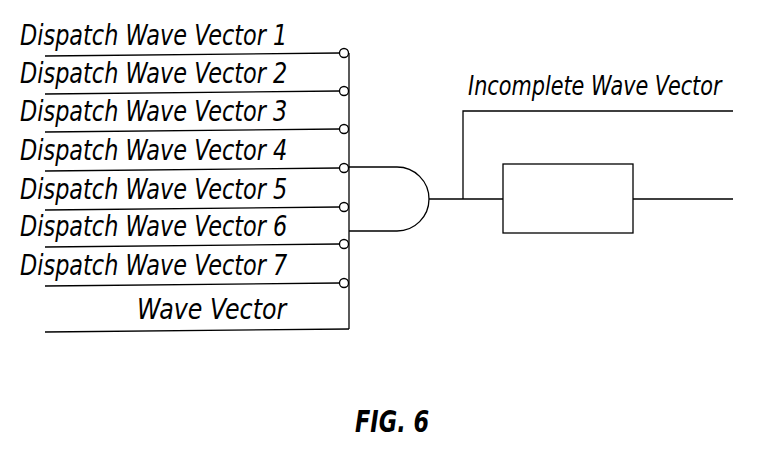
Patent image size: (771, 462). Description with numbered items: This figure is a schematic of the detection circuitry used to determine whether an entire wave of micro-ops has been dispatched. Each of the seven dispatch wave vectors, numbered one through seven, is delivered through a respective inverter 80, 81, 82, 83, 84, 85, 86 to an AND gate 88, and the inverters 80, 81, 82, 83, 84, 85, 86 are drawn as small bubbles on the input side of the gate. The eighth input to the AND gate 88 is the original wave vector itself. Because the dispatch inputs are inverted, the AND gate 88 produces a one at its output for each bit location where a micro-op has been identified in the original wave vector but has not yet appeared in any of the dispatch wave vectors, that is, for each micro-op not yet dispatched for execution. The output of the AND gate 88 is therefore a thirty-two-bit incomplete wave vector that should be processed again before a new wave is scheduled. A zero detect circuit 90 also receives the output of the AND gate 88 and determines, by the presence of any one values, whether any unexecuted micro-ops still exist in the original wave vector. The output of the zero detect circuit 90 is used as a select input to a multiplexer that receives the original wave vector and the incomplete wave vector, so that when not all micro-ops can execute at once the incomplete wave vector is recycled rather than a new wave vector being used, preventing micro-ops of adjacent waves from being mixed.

The inverter 80 is at (346, 49).
The inverter 81 is at (346, 87).
The inverter 82 is at (346, 125).
The inverter 83 is at (346, 164).
The inverter 84 is at (347, 211).
The inverter 85 is at (348, 249).
The inverter 86 is at (349, 290).
The AND gate 88 is at (402, 210).
The zero detect circuit 90 is at (577, 163).